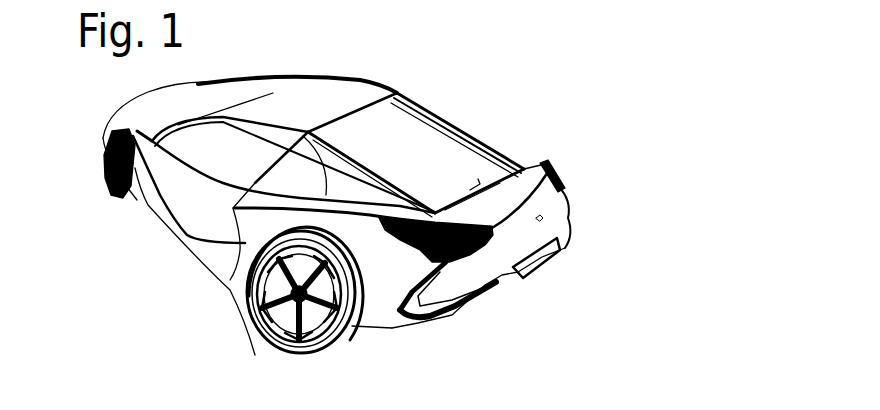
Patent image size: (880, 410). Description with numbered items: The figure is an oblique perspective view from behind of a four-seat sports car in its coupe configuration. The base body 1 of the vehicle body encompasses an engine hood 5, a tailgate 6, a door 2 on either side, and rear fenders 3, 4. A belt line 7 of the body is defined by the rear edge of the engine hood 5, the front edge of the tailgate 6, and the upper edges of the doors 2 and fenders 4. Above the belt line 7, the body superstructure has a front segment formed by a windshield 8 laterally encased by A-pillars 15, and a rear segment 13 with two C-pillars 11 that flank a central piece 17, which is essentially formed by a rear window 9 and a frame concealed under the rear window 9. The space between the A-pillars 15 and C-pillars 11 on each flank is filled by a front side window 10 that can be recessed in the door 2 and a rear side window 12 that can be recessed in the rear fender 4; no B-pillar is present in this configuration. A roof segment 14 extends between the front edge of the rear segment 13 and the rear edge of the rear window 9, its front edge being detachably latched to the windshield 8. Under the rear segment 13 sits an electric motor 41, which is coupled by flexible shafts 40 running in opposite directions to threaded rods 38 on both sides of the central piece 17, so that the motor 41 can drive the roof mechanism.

The base body 1 is at (584, 286).
The door 2 is at (188, 209).
The rear fender 3 is at (107, 148).
The rear fender 4 is at (377, 283).
The engine hood 5 is at (148, 95).
The tailgate 6 is at (551, 166).
The belt line 7 is at (380, 200).
The windshield 8 is at (248, 92).
The rear window 9 is at (426, 132).
The front side window 10 is at (208, 150).
The C-pillar 11 is at (330, 162).
The rear side window 12 is at (286, 170).
The rear segment 13 is at (432, 83).
The roof segment 14 is at (329, 90).
The A-pillar 15 is at (195, 117).
The central piece 17 is at (426, 132).
The threaded rod 38 is at (422, 110).
The flexible shaft 40 is at (530, 186).
The electric motor 41 is at (477, 185).